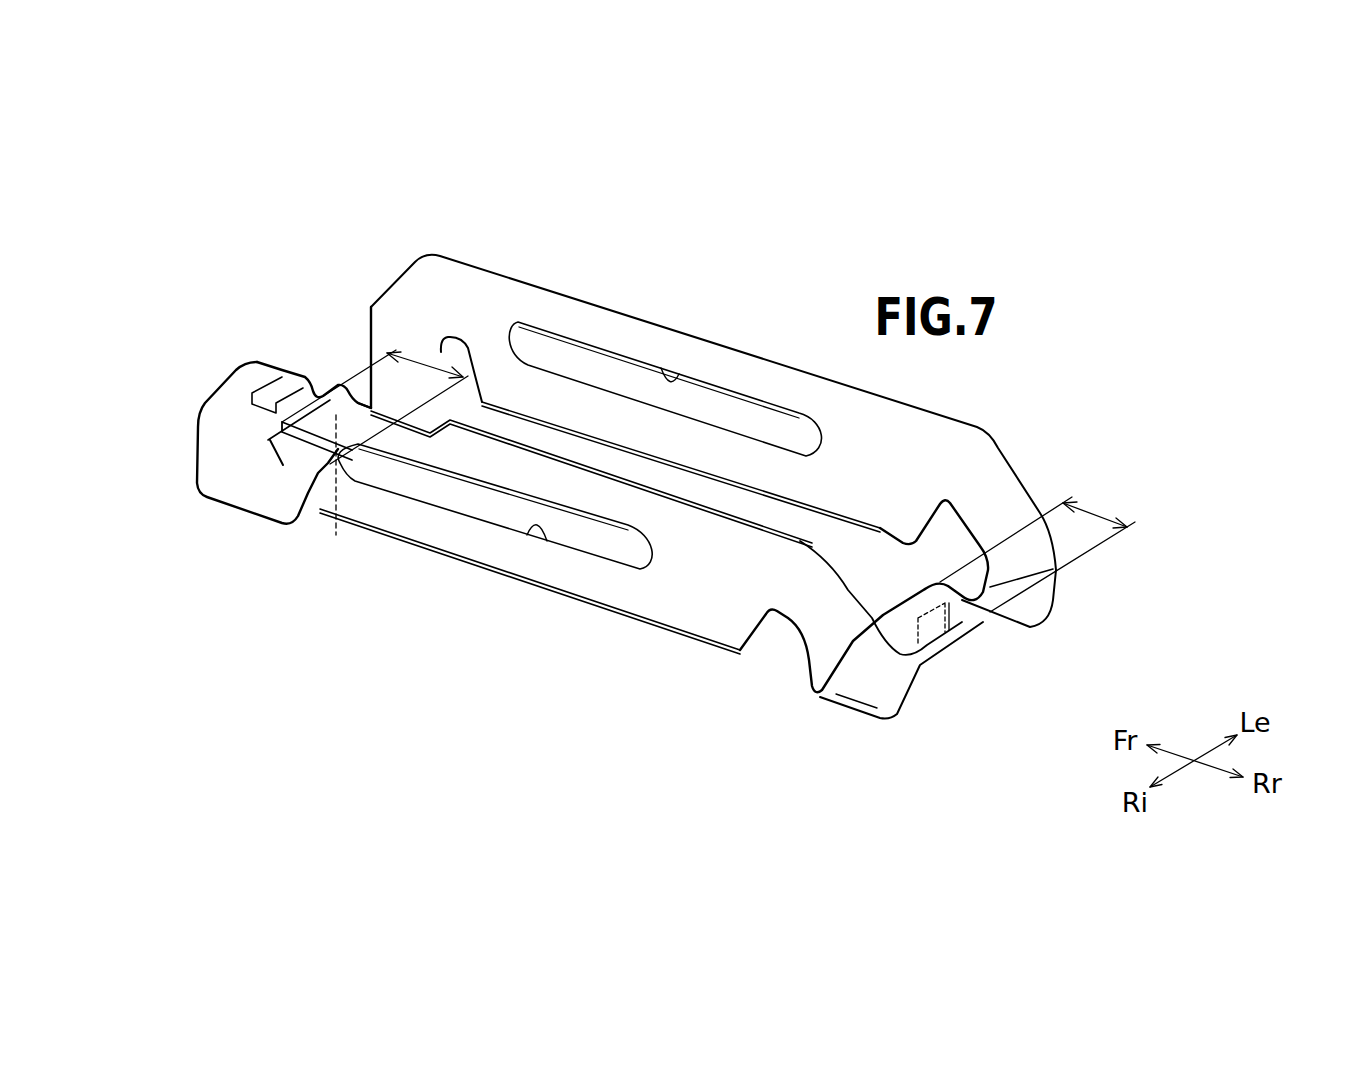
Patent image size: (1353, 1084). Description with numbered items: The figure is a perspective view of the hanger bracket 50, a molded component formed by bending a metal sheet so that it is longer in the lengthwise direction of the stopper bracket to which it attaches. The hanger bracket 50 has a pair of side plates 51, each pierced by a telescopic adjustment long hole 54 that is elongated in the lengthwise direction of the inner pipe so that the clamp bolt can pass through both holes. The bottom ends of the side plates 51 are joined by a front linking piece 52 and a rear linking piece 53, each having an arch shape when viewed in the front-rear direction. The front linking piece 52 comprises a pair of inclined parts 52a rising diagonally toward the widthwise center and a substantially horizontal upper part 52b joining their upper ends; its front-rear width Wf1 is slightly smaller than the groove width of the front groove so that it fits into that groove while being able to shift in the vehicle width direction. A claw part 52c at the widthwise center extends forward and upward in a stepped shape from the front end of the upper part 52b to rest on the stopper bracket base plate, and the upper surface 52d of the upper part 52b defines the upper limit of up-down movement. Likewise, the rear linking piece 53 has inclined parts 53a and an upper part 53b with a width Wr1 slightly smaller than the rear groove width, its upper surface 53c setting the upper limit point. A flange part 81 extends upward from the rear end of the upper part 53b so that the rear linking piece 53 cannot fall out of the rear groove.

The hanger bracket 50 is at (240, 255).
The side plate 51 is at (580, 317).
The front linking piece 52 is at (261, 470).
The inclined part 52a is at (253, 478).
The upper part 52b is at (283, 470).
The claw part 52c is at (256, 394).
The upper surface 52d is at (328, 387).
The rear linking piece 53 is at (877, 675).
The inclined part 53a is at (874, 680).
The upper part 53b is at (910, 618).
The upper surface 53c is at (882, 606).
The telescopic adjustment long hole 54 is at (686, 380).
The flange part 81 is at (930, 588).
The front-rear direction width Wf1 is at (428, 363).
The front-rear direction width Wr1 is at (1100, 517).